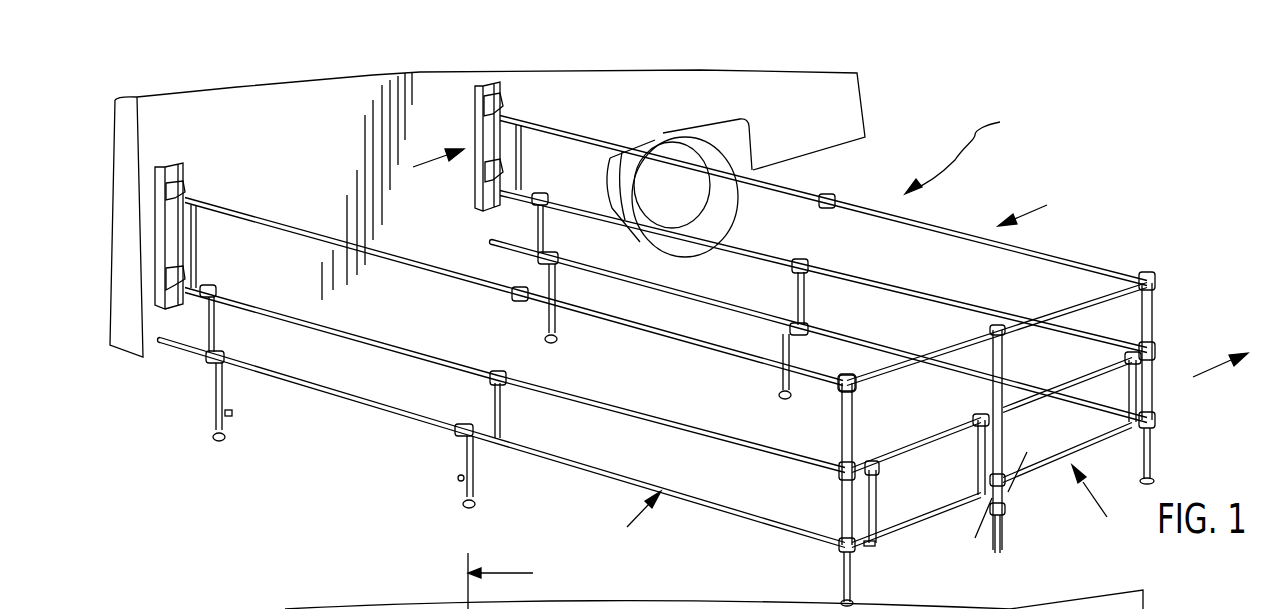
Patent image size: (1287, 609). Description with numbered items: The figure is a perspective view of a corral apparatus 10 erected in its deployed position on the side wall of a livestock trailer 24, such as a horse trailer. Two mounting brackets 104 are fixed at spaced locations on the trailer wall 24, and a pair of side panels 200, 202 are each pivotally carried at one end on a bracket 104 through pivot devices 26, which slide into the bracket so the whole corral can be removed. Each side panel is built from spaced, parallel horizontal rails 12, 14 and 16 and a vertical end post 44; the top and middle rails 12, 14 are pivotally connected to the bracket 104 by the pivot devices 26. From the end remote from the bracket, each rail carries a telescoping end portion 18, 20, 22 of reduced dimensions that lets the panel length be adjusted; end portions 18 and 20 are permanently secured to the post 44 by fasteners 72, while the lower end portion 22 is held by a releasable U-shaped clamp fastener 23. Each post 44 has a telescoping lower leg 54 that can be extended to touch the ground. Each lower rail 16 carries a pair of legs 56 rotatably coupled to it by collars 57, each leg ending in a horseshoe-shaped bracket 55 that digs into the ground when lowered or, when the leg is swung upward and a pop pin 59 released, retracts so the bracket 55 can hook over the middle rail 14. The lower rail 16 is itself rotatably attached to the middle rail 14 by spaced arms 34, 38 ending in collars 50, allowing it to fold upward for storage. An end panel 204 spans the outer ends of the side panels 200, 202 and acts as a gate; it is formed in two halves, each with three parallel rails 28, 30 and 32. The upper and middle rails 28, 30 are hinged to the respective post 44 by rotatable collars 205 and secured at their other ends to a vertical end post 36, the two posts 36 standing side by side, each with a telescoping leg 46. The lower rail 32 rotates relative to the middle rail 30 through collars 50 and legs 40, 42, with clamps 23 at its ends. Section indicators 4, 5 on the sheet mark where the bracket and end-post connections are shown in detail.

The corral apparatus 10 is at (979, 146).
The top rail 12 is at (263, 227).
The middle rail 14 is at (333, 322).
The lower rail 16 is at (303, 382).
The telescoping end portion 18 is at (703, 348).
The telescoping end portion 20 is at (640, 413).
The telescoping end portion 22 is at (617, 470).
The releasable clamp fastener 23 is at (839, 545).
The livestock trailer 24 is at (267, 97).
The pivot device 26 is at (183, 190).
The upper rail 28 is at (1068, 303).
The middle rail 30 is at (903, 455).
The lower rail 32 is at (917, 527).
The arm 34 is at (217, 320).
The end post 36 is at (990, 383).
The arm 38 is at (501, 412).
The leg 40 is at (873, 533).
The leg 42 is at (985, 530).
The end post 44 is at (841, 420).
The telescoping leg 46 is at (1003, 540).
The collar 50 is at (217, 290).
The lower leg 54 is at (843, 568).
The U-shaped bracket 55 is at (212, 438).
The leg 56 is at (230, 396).
The collar 57 is at (210, 368).
The pop pin 59 is at (233, 413).
The fastener 72 is at (841, 377).
The mounting bracket 104 is at (180, 163).
The side panel 200 is at (625, 519).
The side panel 202 is at (1044, 210).
The end panel 204 is at (1095, 502).
The rotatable collar 205 is at (838, 388).
The section line 4 is at (512, 581).
The section line 5 is at (820, 272).